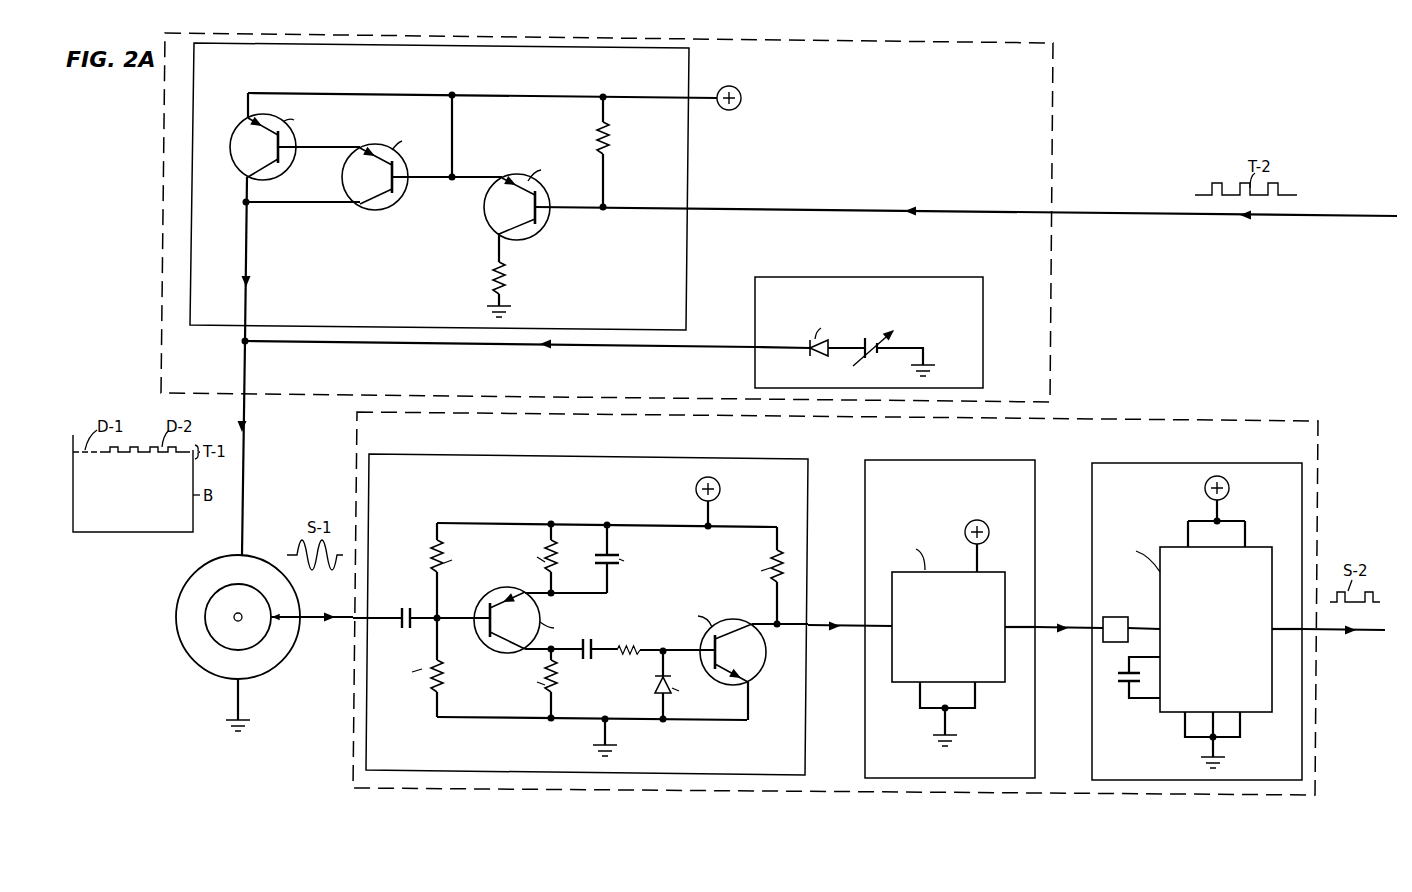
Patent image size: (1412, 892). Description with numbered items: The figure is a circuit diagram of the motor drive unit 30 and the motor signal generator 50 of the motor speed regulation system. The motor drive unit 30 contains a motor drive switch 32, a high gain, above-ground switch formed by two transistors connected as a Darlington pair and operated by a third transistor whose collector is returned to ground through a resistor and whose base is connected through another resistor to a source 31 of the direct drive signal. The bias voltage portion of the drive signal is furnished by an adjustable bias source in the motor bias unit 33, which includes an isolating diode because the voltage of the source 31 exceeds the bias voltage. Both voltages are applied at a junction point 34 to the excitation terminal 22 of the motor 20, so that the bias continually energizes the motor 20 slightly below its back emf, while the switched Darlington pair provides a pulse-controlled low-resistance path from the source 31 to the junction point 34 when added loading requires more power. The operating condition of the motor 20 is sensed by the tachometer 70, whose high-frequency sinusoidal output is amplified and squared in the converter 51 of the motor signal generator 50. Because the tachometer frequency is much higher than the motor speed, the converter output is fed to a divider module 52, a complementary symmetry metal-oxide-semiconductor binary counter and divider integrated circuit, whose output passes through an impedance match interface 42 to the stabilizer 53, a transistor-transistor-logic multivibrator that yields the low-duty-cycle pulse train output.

The motor 20 is at (235, 643).
The excitation terminal 22 is at (244, 503).
The motor drive unit 30 is at (160, 351).
The source of the direct drive signal 31 is at (741, 101).
The motor drive switch 32 is at (689, 166).
The motor bias unit 33 is at (905, 277).
The junction point 34 is at (242, 343).
The impedance match interface 42 is at (1131, 604).
The motor signal generator 50 is at (1258, 421).
The converter 51 is at (808, 523).
The divider module 52 is at (1035, 526).
The stabilizer 53 is at (1087, 727).
The tachometer 70 is at (208, 638).